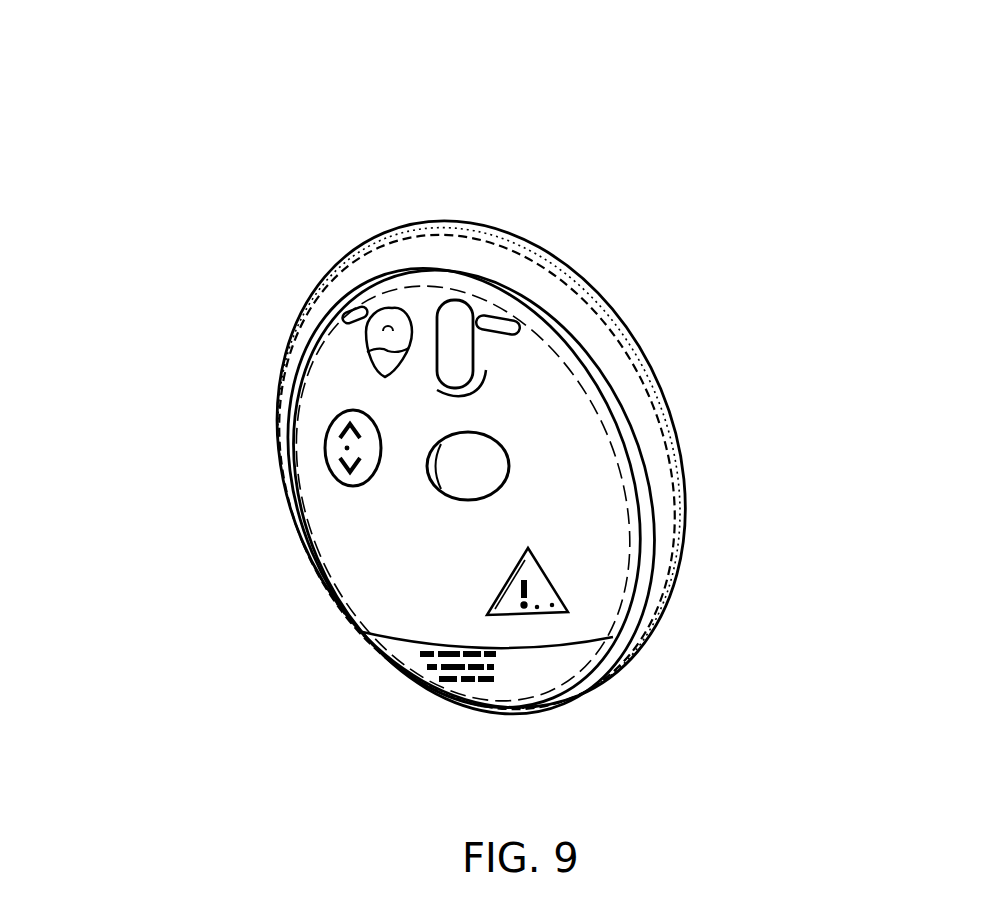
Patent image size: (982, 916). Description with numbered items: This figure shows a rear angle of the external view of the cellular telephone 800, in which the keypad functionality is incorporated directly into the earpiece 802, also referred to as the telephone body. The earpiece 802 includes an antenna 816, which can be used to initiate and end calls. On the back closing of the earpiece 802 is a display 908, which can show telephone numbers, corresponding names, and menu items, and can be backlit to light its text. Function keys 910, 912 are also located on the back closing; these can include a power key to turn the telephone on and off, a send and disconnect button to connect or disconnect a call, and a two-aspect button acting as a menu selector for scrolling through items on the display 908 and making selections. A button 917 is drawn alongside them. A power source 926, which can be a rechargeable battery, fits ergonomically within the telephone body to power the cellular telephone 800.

The cellular telephone 800 is at (463, 82).
The earpiece 802 is at (513, 233).
The antenna 816 is at (512, 319).
The function key 910 is at (282, 396).
The up/down adjustment button 917 is at (327, 450).
The function key 912 is at (509, 458).
The display 908 is at (318, 567).
The power source 926 is at (643, 628).